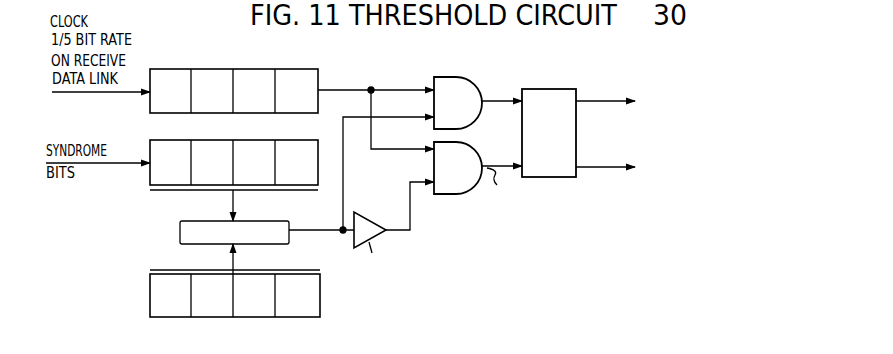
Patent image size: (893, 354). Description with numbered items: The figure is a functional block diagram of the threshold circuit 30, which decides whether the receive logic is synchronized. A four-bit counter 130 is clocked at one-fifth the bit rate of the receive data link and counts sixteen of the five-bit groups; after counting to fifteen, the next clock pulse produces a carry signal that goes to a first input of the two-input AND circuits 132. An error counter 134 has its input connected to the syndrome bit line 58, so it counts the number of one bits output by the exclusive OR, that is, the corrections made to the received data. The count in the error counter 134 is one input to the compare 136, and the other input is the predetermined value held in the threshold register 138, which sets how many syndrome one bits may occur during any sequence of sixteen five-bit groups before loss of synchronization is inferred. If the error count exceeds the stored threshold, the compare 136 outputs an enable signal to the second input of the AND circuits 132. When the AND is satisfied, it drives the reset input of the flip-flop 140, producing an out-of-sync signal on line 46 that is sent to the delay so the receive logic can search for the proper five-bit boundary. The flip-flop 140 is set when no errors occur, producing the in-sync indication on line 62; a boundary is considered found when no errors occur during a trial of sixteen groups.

The threshold circuit 30 is at (501, 65).
The out-of-sync signal line 46 is at (586, 101).
The syndrome bit line 58 is at (97, 166).
The in sync line 62 is at (604, 167).
The four-bit counter 130 is at (303, 68).
The two-input AND circuits 132 is at (457, 77).
The error counter 134 is at (284, 140).
The compare 136 is at (270, 221).
The threshold register 138 is at (150, 281).
The flip-flop 140 is at (549, 89).